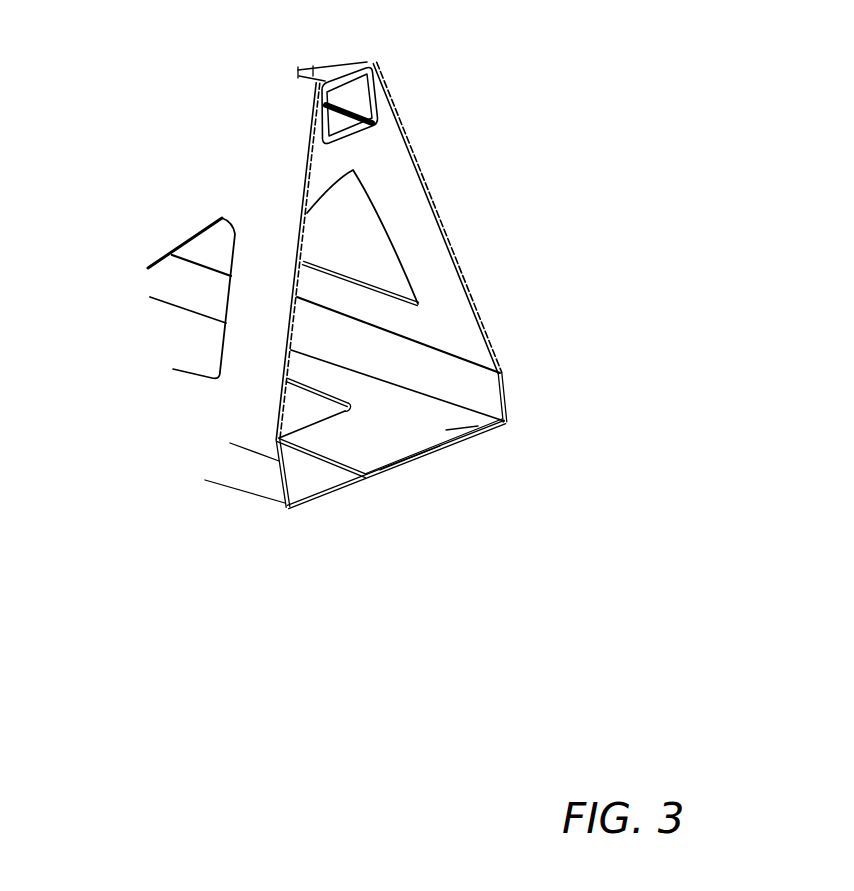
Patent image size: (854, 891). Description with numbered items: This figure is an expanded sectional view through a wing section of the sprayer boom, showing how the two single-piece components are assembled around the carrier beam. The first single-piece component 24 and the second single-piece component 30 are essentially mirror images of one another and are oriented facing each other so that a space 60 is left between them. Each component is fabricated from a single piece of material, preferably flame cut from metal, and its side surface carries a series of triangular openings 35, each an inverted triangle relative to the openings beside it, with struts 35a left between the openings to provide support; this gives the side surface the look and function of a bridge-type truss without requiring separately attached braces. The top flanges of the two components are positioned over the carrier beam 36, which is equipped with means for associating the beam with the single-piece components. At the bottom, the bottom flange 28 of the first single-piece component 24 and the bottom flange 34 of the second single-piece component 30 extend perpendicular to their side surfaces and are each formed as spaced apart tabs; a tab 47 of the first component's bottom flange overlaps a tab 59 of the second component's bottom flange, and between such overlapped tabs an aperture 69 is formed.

The first single-piece component 24 is at (287, 149).
The carrier beam 36 is at (374, 98).
The second single-piece component 30 is at (427, 190).
The space 60 is at (370, 245).
The struts 35a is at (443, 286).
The triangular openings 35 is at (217, 250).
The bottom flange 34 is at (497, 426).
The bottom flange 28 is at (357, 486).
The tab 59 is at (433, 457).
The tab 47 is at (393, 468).
The aperture 69 is at (296, 405).